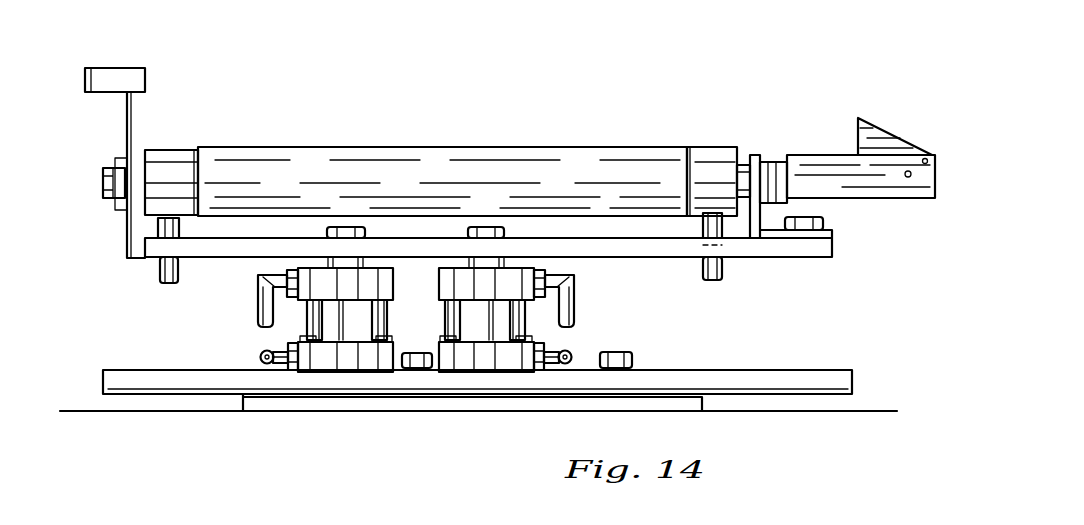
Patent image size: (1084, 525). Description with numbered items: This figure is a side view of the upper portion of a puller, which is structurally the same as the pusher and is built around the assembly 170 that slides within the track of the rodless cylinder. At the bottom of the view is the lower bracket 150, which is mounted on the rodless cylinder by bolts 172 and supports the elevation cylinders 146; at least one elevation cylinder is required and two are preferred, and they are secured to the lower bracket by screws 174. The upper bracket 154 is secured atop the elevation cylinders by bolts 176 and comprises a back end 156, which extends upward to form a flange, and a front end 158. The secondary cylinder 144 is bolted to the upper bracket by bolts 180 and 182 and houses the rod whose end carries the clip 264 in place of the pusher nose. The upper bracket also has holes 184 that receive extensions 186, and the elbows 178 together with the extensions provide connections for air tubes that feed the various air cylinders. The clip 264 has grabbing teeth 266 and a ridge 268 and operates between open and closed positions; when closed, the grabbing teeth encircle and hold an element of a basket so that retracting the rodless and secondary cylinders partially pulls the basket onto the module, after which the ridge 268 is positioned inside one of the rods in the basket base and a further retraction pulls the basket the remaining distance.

The secondary cylinder 144 is at (294, 143).
The elevation cylinders 146 is at (493, 306).
The lower bracket 150 is at (860, 374).
The upper bracket 154 is at (843, 251).
The back end 156 is at (108, 128).
The front end 158 is at (752, 155).
The assembly 170 is at (456, 71).
The bolts 172 is at (618, 357).
The screws 174 is at (372, 372).
The bolts 176 is at (350, 227).
The elbows 178 is at (262, 355).
The bolts 180 is at (122, 208).
The bolts 182 is at (823, 213).
The holes 184 is at (712, 246).
The extensions 186 is at (164, 283).
The clip 264 is at (821, 155).
The grabbing teeth 266 is at (935, 157).
The ridge 268 is at (856, 142).